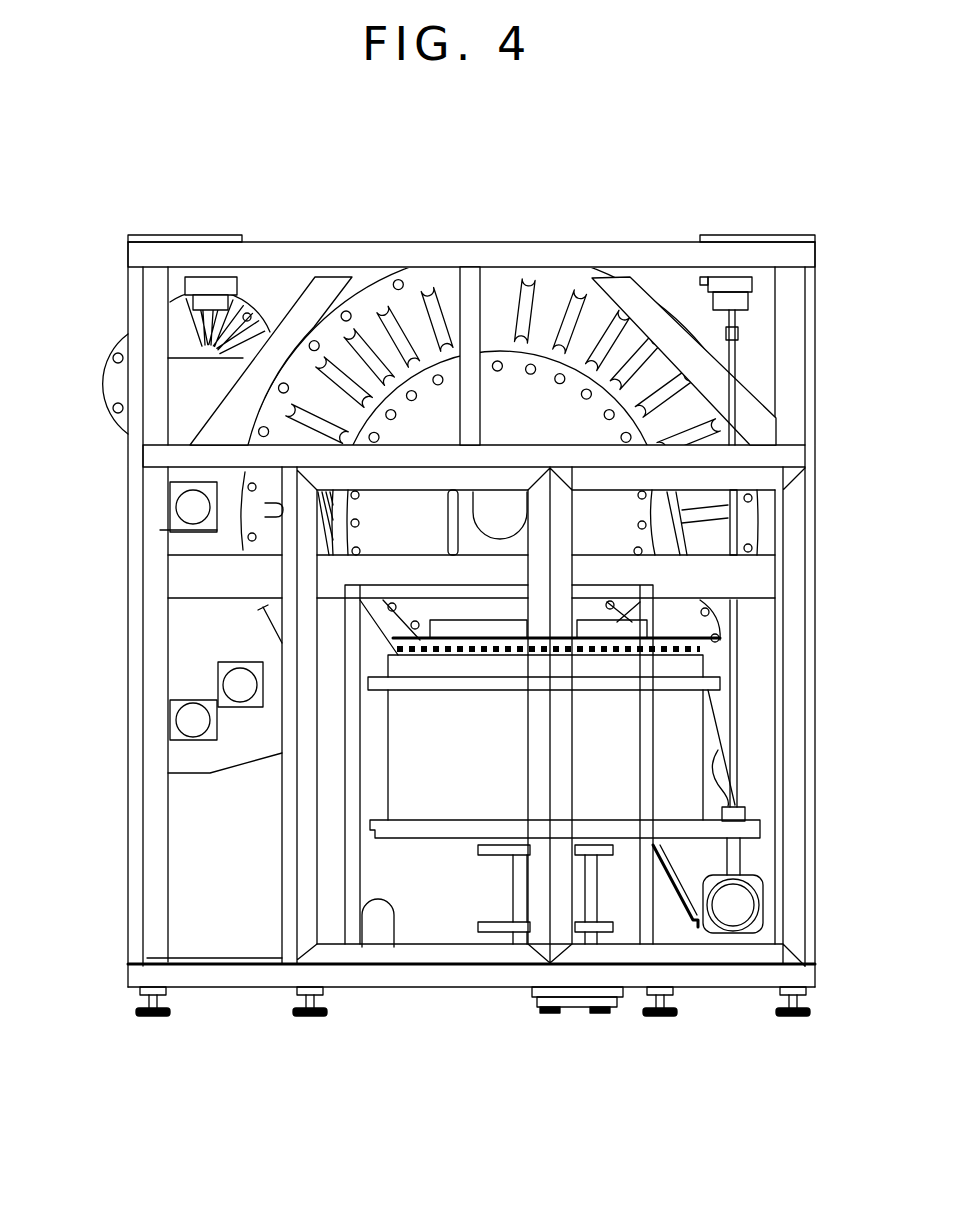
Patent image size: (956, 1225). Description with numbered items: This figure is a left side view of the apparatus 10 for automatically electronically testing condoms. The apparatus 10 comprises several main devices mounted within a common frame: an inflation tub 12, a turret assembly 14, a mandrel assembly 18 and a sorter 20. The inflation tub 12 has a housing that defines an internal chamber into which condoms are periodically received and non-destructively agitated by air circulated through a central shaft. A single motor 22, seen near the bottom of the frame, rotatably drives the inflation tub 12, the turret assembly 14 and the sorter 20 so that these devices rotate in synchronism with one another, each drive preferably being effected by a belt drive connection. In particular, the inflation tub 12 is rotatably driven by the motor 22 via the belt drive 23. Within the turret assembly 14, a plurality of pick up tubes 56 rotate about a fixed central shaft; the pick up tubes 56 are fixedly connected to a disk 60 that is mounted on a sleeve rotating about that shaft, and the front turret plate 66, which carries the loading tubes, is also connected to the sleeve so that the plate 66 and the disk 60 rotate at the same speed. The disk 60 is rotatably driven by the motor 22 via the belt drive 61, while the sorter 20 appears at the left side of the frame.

The apparatus 10 is at (562, 235).
The inflation tub 12 is at (458, 830).
The turret assembly 14 is at (393, 364).
The mandrel assembly 18 is at (262, 614).
The sorter 20 is at (103, 392).
The motor 22 is at (732, 917).
The belt drive 23 is at (408, 835).
The pick up tubes 56 is at (604, 418).
The disk 60 is at (420, 532).
The belt drive 61 is at (743, 790).
The front turret plate 66 is at (495, 292).